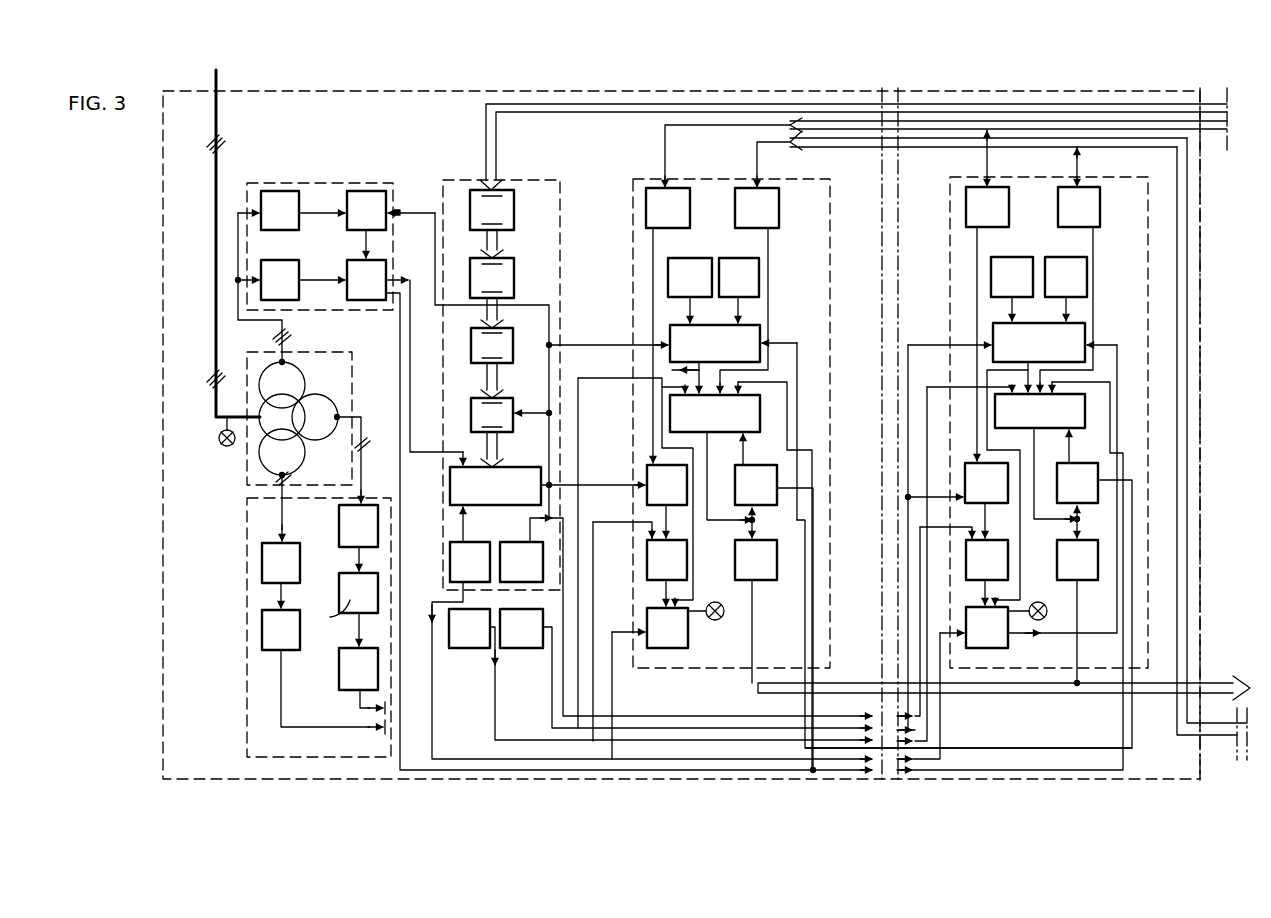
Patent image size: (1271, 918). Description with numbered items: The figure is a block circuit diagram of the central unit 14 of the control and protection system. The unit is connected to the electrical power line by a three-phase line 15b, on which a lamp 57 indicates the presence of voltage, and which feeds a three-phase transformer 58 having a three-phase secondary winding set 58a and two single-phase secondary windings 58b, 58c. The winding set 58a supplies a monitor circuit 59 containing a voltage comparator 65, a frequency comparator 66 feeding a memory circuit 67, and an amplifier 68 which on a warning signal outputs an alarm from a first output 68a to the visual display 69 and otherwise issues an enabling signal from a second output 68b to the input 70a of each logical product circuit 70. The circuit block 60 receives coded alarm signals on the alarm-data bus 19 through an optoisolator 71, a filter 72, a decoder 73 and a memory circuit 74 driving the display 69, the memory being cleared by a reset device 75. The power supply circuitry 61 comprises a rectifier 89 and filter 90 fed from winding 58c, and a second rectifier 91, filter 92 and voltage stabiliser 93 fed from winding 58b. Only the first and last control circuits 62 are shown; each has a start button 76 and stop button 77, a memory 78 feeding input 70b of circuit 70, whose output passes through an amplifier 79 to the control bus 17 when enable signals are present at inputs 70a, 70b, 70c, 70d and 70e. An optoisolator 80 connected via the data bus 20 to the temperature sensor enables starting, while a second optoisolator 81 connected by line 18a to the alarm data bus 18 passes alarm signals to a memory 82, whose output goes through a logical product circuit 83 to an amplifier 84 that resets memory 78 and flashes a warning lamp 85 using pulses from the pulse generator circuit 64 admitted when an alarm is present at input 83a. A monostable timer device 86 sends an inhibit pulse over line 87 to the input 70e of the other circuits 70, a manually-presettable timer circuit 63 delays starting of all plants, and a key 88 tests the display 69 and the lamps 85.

The central unit 14 is at (553, 91).
The three-phase line 15b is at (216, 130).
The control bus 17 is at (852, 690).
The alarm data bus 18 is at (840, 118).
The line 18a is at (665, 160).
The alarm-data bus 19 is at (486, 140).
The data bus 20 is at (845, 150).
The lamp 57 is at (218, 434).
The three-phase transformer 58 is at (277, 446).
The three-phase secondary winding set 58a is at (304, 388).
The single-phase secondary winding 58b is at (330, 438).
The single-phase secondary winding 58c is at (300, 468).
The monitor circuit 59 is at (300, 183).
The circuit block 60 is at (458, 180).
The power supply circuitry 61 is at (247, 620).
The control circuit 62 is at (635, 178).
The timer circuit 63 is at (530, 645).
The pulse generator circuit 64 is at (478, 645).
The voltage comparator 65 is at (282, 270).
The frequency comparator 66 is at (283, 203).
The memory circuit 67 is at (360, 222).
The amplifier 68 is at (362, 272).
The first output 68a is at (395, 270).
The second output 68b is at (393, 302).
The visual display 69 is at (460, 480).
The logical product circuit 70 is at (715, 425).
The input 70a is at (760, 400).
The input 70b is at (720, 405).
The input 70c is at (700, 380).
The input 70d is at (770, 388).
The input 70e is at (770, 415).
The optoisolator 71 is at (506, 212).
The filter 72 is at (500, 280).
The decoder 73 is at (500, 345).
The memory circuit 74 is at (500, 408).
The reset device 75 is at (518, 548).
The start button 76 is at (698, 268).
The stop button 77 is at (745, 268).
The memory 78 is at (748, 345).
The amplifier 79 is at (760, 568).
The optoisolator 80 is at (748, 205).
The second optoisolator 81 is at (650, 206).
The memory 82 is at (655, 492).
The logical product circuit 83 is at (665, 572).
The input 83a is at (660, 545).
The amplifier 84 is at (680, 648).
The warning lamp 85 is at (718, 602).
The monostable timer device 86 is at (760, 500).
The line 87 is at (1132, 610).
The key 88 is at (458, 562).
The rectifier 89 is at (258, 558).
The filter 90 is at (265, 640).
The second rectifier 91 is at (345, 518).
The filter 92 is at (340, 606).
The voltage stabiliser 93 is at (345, 674).